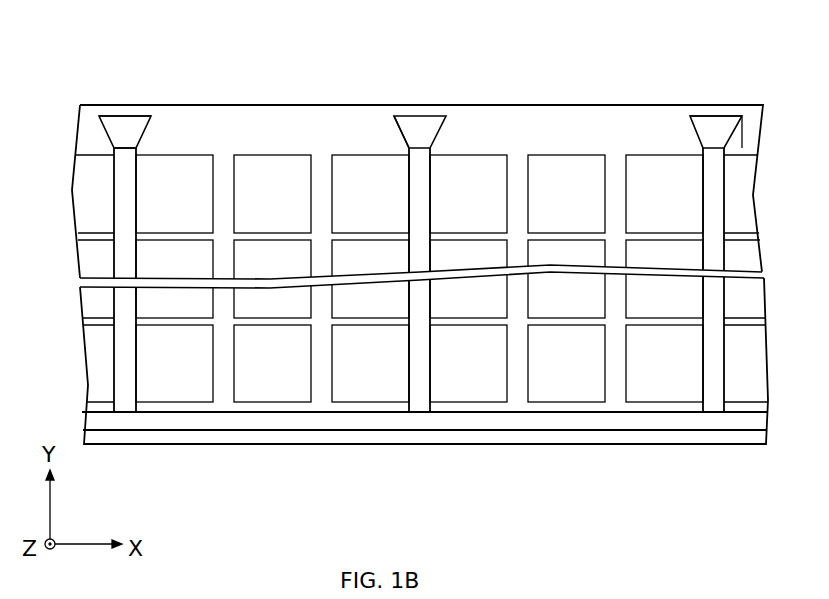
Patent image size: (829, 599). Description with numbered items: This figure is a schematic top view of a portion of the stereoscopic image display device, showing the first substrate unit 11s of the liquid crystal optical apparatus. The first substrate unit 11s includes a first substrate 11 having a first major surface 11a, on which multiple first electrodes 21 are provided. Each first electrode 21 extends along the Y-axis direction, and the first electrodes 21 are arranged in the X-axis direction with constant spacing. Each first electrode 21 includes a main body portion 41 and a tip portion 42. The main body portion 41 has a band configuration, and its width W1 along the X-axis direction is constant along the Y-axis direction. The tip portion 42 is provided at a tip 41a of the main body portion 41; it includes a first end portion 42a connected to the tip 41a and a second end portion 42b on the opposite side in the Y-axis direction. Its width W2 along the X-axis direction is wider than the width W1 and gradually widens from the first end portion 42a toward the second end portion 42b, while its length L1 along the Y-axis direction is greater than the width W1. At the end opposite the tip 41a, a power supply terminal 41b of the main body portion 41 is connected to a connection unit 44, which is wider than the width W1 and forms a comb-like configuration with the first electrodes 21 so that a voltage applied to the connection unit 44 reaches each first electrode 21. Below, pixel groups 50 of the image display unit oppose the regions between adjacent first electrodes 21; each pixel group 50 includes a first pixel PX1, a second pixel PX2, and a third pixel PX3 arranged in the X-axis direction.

The first substrate 11 is at (140, 445).
The first major surface 11a is at (276, 130).
The first substrate unit 11s is at (553, 105).
The first electrode 21 is at (378, 207).
The main body portion 41 is at (369, 226).
The tip 41a is at (405, 140).
The power supply terminal 41b is at (125, 412).
The tip portion 42 is at (378, 122).
The first end portion 42a is at (118, 142).
The second end portion 42b is at (110, 113).
The connection unit 44 is at (422, 425).
The pixel group 50 is at (421, 345).
The first pixel PX1 is at (210, 403).
The second pixel PX2 is at (278, 403).
The third pixel PX3 is at (516, 324).
The first width W1 is at (703, 412).
The second width W2 is at (668, 82).
The length of the tip portion L1 is at (776, 92).